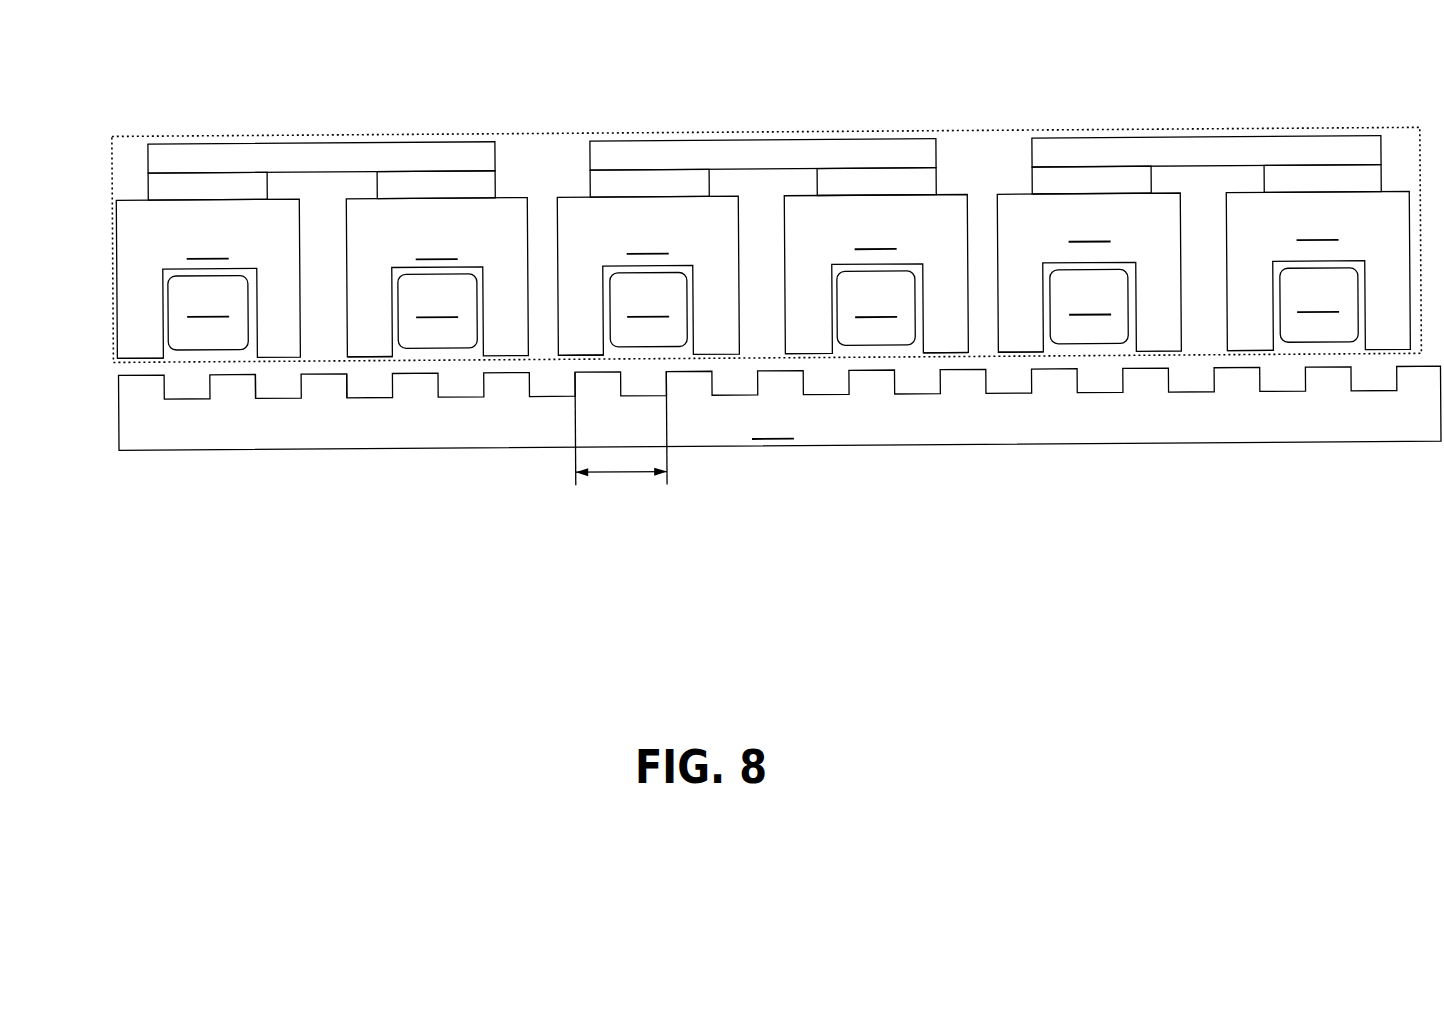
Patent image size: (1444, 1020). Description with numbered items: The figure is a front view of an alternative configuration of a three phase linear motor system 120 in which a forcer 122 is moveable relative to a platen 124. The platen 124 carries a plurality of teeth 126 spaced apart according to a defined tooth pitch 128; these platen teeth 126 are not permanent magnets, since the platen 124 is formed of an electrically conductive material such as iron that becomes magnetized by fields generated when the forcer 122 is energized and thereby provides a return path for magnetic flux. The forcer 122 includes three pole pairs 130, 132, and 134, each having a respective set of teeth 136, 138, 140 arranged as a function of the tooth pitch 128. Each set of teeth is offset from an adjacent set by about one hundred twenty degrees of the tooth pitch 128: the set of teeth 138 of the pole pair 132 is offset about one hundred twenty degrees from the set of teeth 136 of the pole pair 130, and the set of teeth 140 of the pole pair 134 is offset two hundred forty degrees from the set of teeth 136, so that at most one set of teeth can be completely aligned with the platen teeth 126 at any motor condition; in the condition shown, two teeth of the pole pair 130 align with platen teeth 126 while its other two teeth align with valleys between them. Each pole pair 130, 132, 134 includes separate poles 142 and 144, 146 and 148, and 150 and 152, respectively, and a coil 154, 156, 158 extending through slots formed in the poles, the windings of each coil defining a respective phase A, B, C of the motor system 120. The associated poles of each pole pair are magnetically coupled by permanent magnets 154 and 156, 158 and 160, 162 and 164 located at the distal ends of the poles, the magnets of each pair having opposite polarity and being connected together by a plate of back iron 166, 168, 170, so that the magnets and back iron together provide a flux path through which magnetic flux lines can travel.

The three phase linear motor system 120 is at (907, 85).
The forcer 122 is at (458, 118).
The platen 124 is at (780, 408).
The platen teeth 126 is at (255, 387).
The tooth pitch 128 is at (628, 472).
The first pole pair 130 is at (517, 161).
The second pole pair 132 is at (954, 166).
The third pole pair 134 is at (1402, 129).
The set of teeth of first pole pair 136 is at (137, 353).
The set of teeth of second pole pair 138 is at (593, 354).
The set of teeth of third pole pair 140 is at (1025, 355).
The pole 142 is at (208, 278).
The pole 144 is at (437, 277).
The pole 146 is at (648, 275).
The pole 148 is at (876, 273).
The pole 150 is at (1089, 272).
The pole 152 is at (1318, 270).
The coil / permanent magnet 154 is at (163, 183).
The coil / permanent magnet 156 is at (385, 185).
The coil / permanent magnet 158 is at (610, 186).
The permanent magnet 160 is at (827, 187).
The permanent magnet 162 is at (1047, 187).
The permanent magnet 164 is at (1263, 188).
The back iron plate 166 is at (305, 149).
The back iron plate 168 is at (757, 150).
The back iron plate 170 is at (1198, 150).